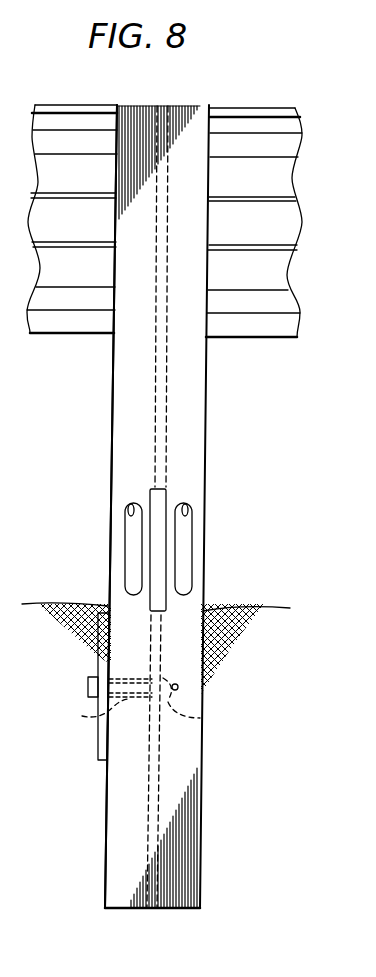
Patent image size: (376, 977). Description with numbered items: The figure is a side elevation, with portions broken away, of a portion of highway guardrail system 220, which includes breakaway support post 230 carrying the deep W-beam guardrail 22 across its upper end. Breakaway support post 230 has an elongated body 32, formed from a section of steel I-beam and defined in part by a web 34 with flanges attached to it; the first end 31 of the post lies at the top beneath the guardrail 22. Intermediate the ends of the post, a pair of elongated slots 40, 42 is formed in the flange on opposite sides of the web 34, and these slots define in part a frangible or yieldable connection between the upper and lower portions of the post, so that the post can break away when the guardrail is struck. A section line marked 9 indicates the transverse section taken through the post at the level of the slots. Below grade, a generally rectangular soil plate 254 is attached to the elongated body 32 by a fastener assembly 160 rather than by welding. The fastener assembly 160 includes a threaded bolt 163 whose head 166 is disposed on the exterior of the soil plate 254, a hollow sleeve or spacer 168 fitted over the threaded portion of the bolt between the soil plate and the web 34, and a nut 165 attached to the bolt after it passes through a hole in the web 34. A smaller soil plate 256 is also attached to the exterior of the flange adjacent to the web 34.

The guardrail 22 is at (56, 96).
The highway guardrail system 220 is at (265, 75).
The first end 31 is at (179, 105).
The elongated body 32 is at (214, 410).
The web 34 is at (167, 354).
The breakaway support post 230 is at (98, 407).
The elongated slot 40 is at (133, 504).
The elongated slot 42 is at (182, 504).
The section line 9- 9 is at (82, 547).
The soil plate 256 is at (157, 588).
The fastener assembly 160 is at (115, 672).
The head 166 is at (87, 689).
The hollow sleeve or spacer 168 is at (89, 724).
The soil plate 254 is at (100, 758).
The threaded bolt 163 is at (180, 689).
The nut 165 is at (203, 719).